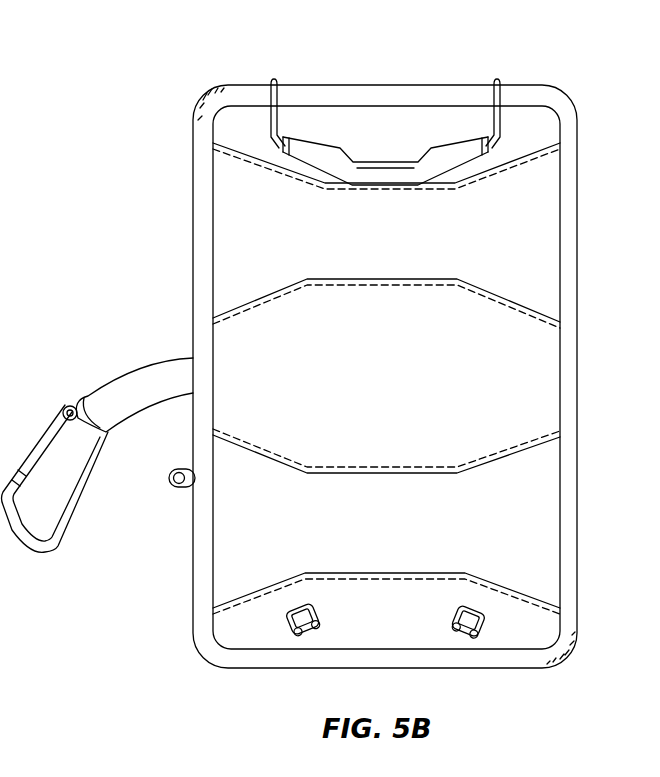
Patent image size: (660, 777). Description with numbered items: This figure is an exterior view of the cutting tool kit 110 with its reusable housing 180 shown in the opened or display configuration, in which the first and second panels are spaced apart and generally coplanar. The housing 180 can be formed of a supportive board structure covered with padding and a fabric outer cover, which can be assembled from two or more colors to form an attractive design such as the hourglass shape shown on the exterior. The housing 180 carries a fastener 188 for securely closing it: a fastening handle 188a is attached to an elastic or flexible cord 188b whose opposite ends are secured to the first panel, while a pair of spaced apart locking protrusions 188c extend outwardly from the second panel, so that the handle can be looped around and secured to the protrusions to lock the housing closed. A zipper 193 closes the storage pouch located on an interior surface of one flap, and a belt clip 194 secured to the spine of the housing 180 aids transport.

The cutting tool kit 110 is at (200, 675).
The housing 180 is at (578, 366).
The fastener 188 is at (487, 146).
The fastening handle 188a is at (500, 97).
The elastic or flexible cord 188b is at (278, 97).
The locking protrusions 188c is at (307, 640).
The zipper 193 is at (165, 484).
The belt clip 194 is at (35, 543).